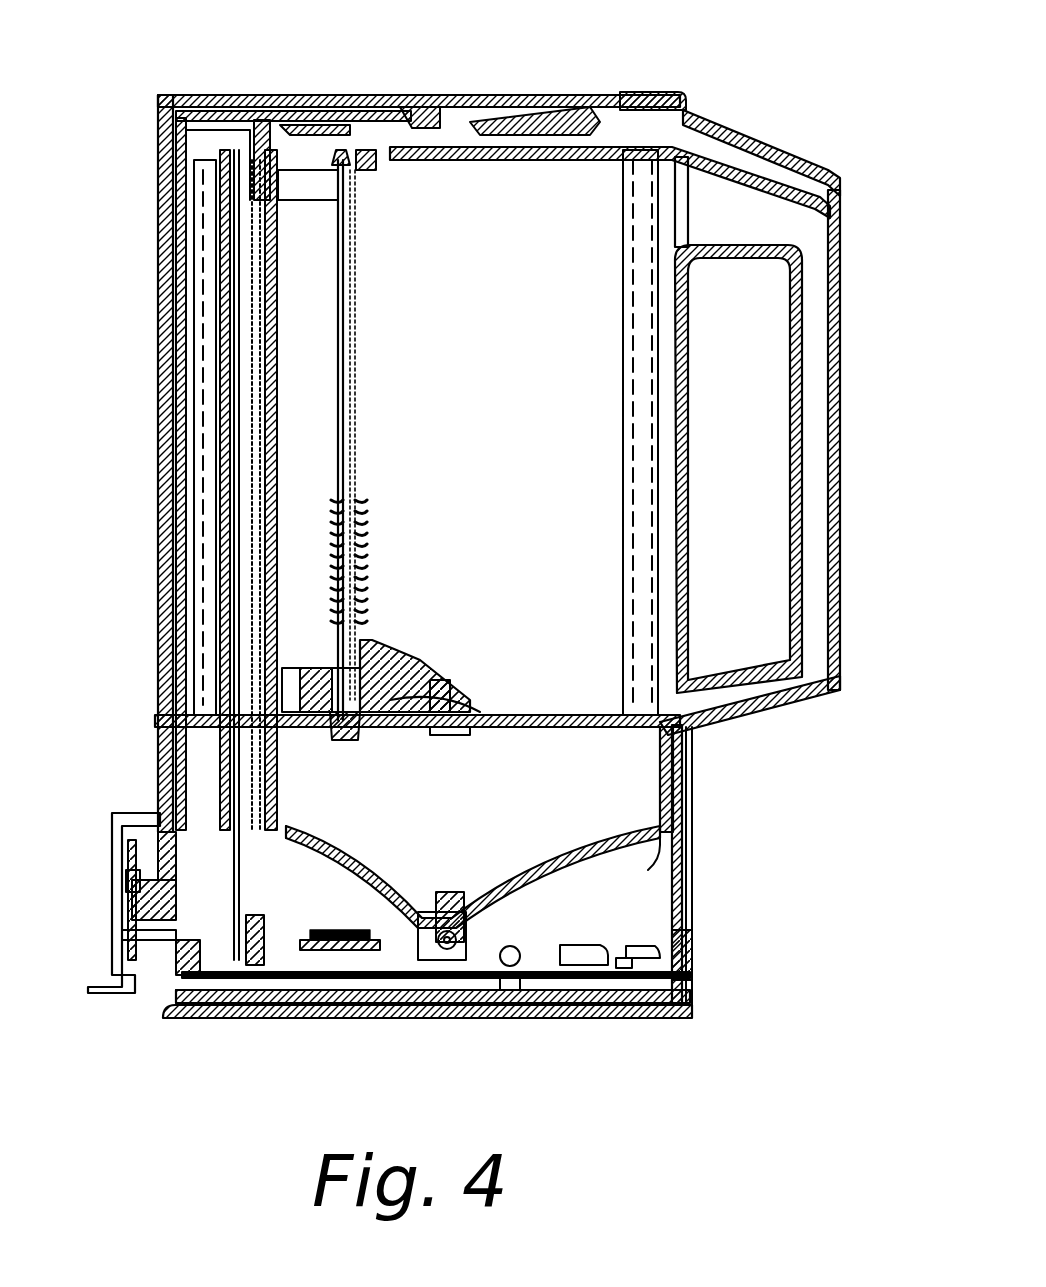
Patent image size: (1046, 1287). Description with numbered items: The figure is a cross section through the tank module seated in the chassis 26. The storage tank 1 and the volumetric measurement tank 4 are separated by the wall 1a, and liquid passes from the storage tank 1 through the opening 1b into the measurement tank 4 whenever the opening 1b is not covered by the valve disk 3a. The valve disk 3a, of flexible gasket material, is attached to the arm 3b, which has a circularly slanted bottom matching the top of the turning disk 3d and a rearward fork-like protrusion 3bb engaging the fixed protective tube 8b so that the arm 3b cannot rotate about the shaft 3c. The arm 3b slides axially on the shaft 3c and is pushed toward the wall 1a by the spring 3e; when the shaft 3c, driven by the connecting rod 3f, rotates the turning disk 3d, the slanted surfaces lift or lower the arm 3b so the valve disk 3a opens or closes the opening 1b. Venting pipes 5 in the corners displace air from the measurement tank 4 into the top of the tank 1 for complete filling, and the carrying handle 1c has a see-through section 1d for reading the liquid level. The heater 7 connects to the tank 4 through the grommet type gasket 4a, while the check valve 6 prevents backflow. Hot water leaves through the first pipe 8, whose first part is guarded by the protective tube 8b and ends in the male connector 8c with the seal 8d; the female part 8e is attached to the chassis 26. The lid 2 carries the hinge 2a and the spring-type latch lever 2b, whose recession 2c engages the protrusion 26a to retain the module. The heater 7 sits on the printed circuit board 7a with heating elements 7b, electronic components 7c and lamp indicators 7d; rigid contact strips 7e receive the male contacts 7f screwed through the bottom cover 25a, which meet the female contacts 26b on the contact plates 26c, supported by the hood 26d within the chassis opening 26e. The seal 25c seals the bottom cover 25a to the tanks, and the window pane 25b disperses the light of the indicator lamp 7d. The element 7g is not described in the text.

The storage tank 1 is at (600, 455).
The wall 1a is at (565, 715).
The opening 1b is at (440, 730).
The carrying handle 1c is at (812, 620).
The see through section 1d is at (830, 250).
The lid 2 is at (495, 160).
The hinge 2a is at (415, 107).
The latch lever 2b is at (718, 132).
The recession 2c is at (585, 107).
The valve disk 3a is at (462, 706).
The arm 3b is at (395, 652).
The rearward fork-like protrusion 3bb is at (332, 672).
The shaft 3c is at (347, 442).
The turning disk 3d is at (330, 732).
The spring 3e is at (366, 566).
The connecting rod 3f is at (385, 108).
The volumetric measurement tank 4 is at (636, 800).
The grommet type gasket 4a is at (440, 892).
The venting pipes 5 is at (216, 455).
The check valve 6 is at (458, 940).
The heater 7 is at (300, 1004).
The printed circuit board 7a is at (528, 1004).
The heating elements 7b is at (325, 930).
The electronic components 7c is at (555, 950).
The lamp indicators 7d is at (640, 948).
The rigid contact strips 7e is at (172, 1006).
The male contacts 7f is at (130, 900).
The base support 7g is at (264, 925).
The first pipe 8 is at (262, 806).
The protective tube 8b is at (276, 500).
The hot water connector 8c is at (300, 108).
The seal 8d is at (288, 160).
The female part 8e is at (210, 102).
The bottom cover 25a is at (690, 858).
The window pane 25b is at (692, 950).
The seal 25c is at (678, 732).
The chassis 26 is at (450, 97).
The protrusion 26a is at (630, 94).
The female contacts 26b is at (122, 948).
The contact plates 26c is at (105, 994).
The hood 26d is at (118, 835).
The chassis opening 26e is at (165, 830).